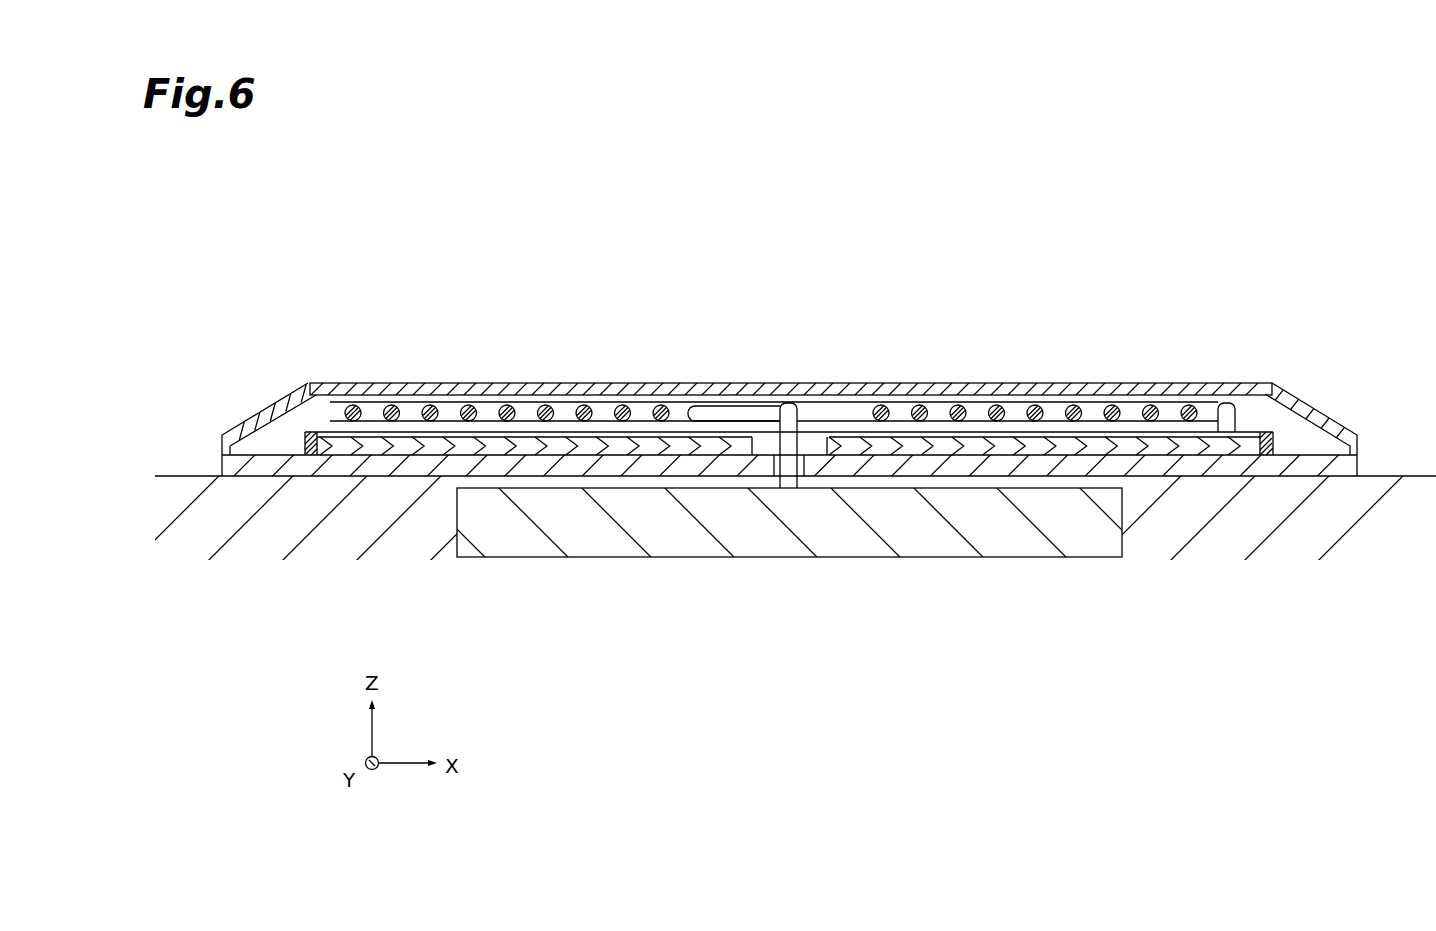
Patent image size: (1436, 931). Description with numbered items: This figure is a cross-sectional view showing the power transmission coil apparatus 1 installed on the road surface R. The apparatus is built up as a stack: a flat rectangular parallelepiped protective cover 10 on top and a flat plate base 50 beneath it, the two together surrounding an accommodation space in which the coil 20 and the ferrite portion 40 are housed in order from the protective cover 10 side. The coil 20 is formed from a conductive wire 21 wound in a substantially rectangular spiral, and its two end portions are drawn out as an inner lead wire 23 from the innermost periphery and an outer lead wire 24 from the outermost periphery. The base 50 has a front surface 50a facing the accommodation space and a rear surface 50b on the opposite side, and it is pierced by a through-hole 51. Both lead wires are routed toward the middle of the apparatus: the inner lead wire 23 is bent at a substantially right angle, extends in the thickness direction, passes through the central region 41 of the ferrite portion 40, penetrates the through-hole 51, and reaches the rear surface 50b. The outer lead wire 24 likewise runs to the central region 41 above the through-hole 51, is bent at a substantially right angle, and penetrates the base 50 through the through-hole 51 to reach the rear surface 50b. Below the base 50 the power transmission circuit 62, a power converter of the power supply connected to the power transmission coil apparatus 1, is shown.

The power transmission coil apparatus 1 is at (1192, 247).
The protective cover 10 is at (1018, 385).
The coil 20 is at (342, 407).
The conductive wire 21 is at (1047, 409).
The inner lead wire 23 is at (787, 425).
The outer lead wire 24 is at (1232, 404).
The ferrite portion 40 is at (298, 432).
The central region 41 is at (764, 432).
The base 50 is at (714, 480).
The front surface 50a is at (1321, 448).
The rear surface 50b is at (1306, 479).
The through-hole 51 is at (789, 452).
The power transmission circuit 62 is at (762, 547).
The road surface R is at (170, 475).